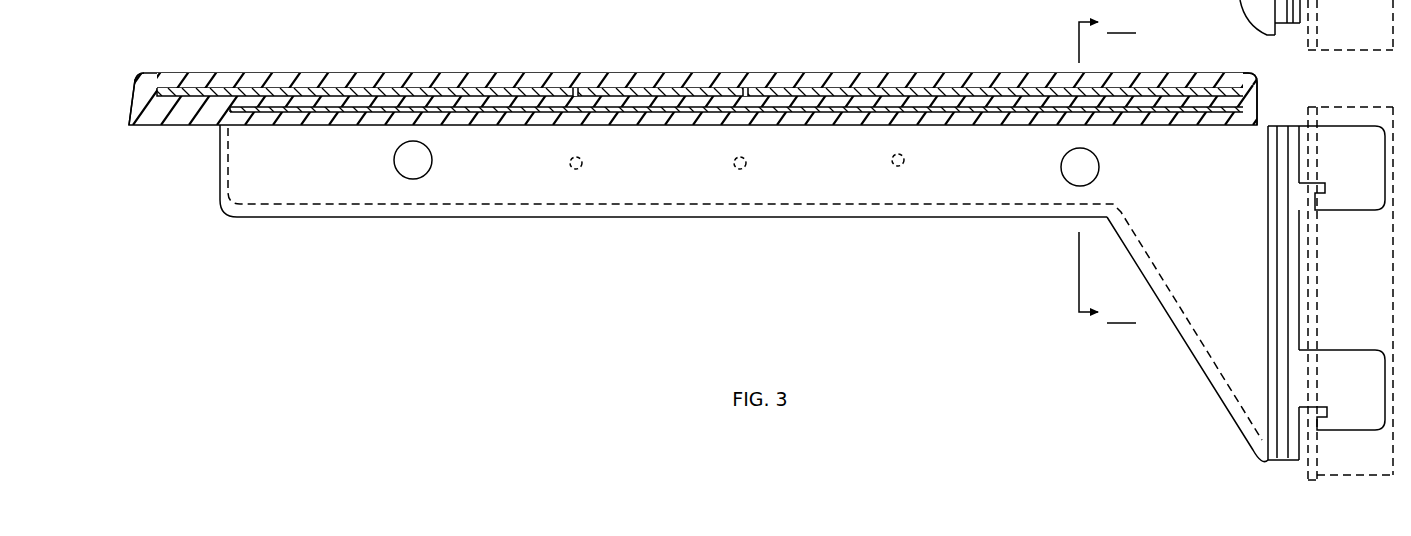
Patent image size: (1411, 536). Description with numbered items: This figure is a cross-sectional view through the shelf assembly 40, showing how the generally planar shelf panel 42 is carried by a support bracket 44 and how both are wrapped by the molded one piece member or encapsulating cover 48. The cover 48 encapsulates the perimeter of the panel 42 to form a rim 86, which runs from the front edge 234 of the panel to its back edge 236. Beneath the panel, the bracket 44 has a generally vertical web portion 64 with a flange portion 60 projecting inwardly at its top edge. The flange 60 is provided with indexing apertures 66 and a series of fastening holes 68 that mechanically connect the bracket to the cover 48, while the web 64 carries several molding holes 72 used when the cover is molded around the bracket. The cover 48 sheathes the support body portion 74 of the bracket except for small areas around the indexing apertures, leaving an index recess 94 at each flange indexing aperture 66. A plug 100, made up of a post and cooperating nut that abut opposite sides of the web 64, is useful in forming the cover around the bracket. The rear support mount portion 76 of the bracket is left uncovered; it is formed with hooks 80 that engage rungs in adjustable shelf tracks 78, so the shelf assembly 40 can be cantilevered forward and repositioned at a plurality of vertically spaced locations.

The shelf assembly 40 is at (487, 303).
The shelf panel 42 is at (815, 73).
The support bracket 44 is at (643, 188).
The one piece member or encapsulating cover 48 is at (885, 218).
The flange portion 60 is at (1170, 112).
The web portion 64 is at (1005, 190).
The indexing apertures 66 is at (412, 100).
The fastening holes 68 is at (576, 104).
The molding holes 72 is at (583, 163).
The support body portion 74 is at (810, 187).
The support mount portion 76 is at (1282, 306).
The adjustable shelf tracks 78 is at (1341, 120).
The hooks 80 is at (1343, 363).
The rim 86 is at (330, 80).
The index recess 94 is at (410, 127).
The plug 100 is at (432, 158).
The front edge 234 is at (142, 78).
The back edge 236 is at (1250, 92).